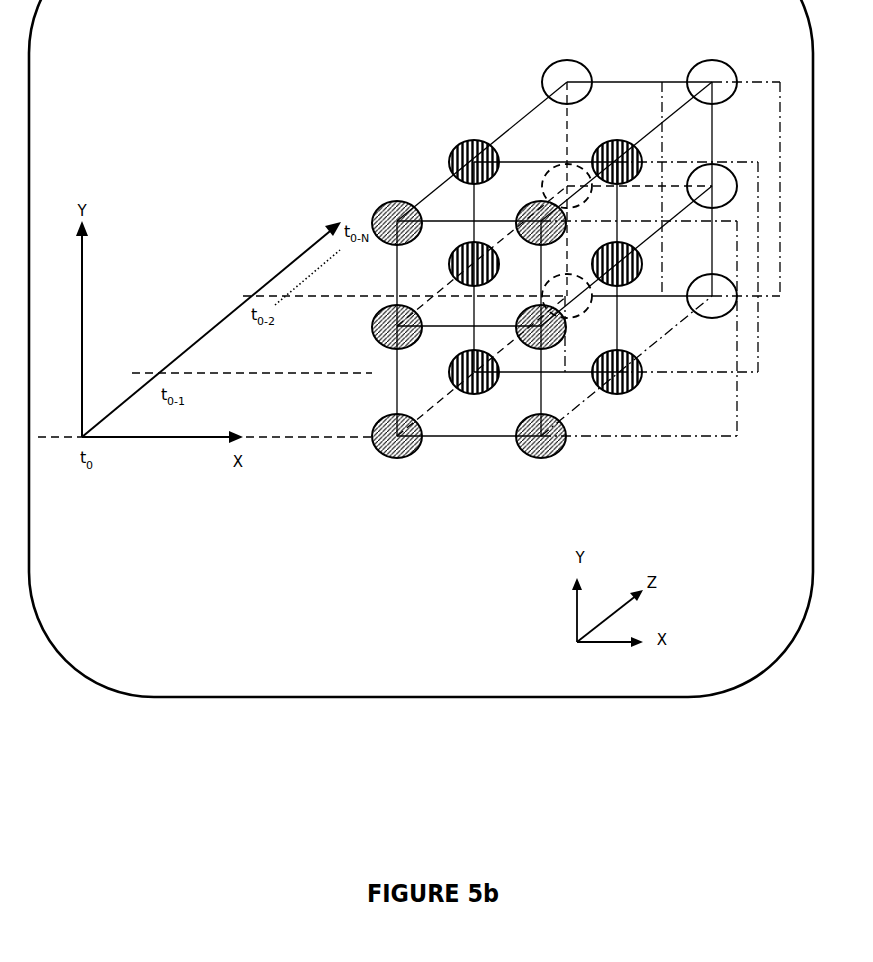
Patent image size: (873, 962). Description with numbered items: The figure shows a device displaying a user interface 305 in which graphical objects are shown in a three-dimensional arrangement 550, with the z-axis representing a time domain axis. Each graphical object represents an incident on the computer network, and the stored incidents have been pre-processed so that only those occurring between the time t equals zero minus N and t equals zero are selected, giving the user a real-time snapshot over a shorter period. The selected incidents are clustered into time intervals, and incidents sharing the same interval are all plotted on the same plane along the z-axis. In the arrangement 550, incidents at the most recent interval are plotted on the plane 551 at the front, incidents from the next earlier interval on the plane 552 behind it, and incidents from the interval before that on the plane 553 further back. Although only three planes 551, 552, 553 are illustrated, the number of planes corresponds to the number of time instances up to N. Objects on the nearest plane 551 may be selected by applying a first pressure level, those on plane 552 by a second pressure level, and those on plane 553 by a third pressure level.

The user interface 305 is at (505, 668).
The three-dimensional arrangement 550 is at (410, 62).
The plane 551 is at (670, 440).
The plane 552 is at (687, 372).
The plane 553 is at (770, 75).